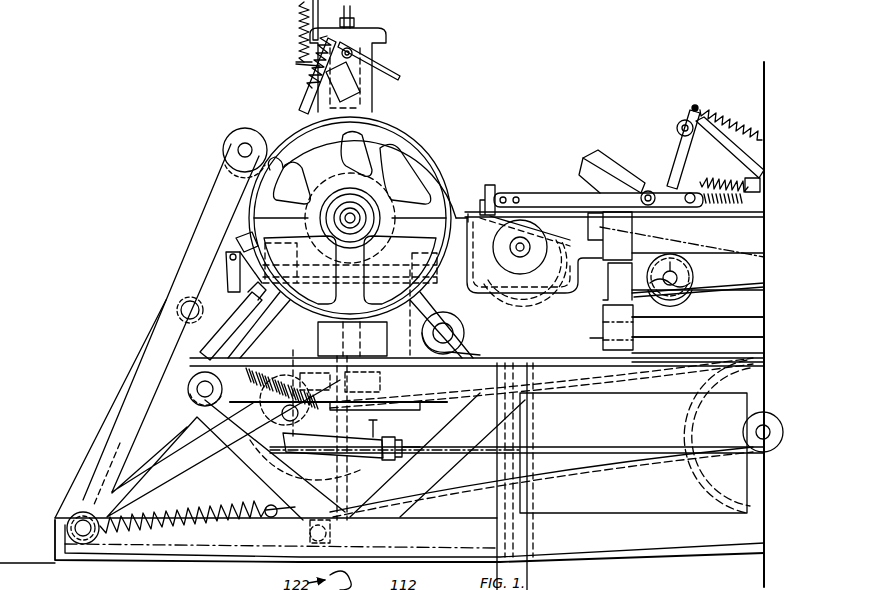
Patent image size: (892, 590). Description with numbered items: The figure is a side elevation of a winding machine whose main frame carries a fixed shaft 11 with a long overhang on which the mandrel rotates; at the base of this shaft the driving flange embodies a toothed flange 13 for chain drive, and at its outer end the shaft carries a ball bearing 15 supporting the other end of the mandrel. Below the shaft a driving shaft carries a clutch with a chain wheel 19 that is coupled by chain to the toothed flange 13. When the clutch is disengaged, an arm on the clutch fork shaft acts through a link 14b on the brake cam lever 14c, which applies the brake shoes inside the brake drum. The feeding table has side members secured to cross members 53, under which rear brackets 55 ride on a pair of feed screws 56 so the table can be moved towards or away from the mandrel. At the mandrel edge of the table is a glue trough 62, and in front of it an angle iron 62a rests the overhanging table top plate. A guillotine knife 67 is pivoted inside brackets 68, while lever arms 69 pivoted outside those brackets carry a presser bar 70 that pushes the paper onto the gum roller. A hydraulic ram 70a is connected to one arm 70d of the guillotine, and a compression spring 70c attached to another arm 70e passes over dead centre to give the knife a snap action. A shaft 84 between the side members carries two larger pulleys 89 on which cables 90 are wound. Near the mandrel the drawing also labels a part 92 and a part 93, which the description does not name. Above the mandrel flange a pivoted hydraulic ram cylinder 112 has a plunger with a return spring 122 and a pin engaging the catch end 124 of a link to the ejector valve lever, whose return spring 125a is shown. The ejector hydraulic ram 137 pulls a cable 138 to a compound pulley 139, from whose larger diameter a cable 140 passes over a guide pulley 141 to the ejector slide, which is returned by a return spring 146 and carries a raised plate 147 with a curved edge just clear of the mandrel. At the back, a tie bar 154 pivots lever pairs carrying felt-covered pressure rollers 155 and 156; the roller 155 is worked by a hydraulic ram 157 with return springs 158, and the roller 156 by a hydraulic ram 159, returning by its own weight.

The fixed shaft 11 is at (374, 204).
The toothed flange 13 is at (412, 191).
The ball bearing 15 is at (354, 201).
The link 14b is at (226, 266).
The brake cam lever 14c is at (236, 242).
The chain wheel 19 is at (418, 433).
The cross members 53 is at (618, 327).
The rear brackets 55 is at (600, 340).
The feed screws 56 is at (698, 327).
The glue trough 62 is at (538, 287).
The angle iron 62a is at (606, 232).
The guillotine knife 67 is at (581, 188).
The brackets 68 is at (648, 190).
The lever arms 69 is at (536, 192).
The presser bar 70 is at (493, 187).
The hydraulic ram 70a is at (719, 140).
The compression spring 70c is at (718, 182).
The arm of the guillotine 70d is at (672, 180).
The arm of the guillotine 70e is at (676, 132).
The shaft 84 is at (673, 270).
The larger pulleys 89 is at (695, 278).
The cables 90 is at (688, 303).
The shield 92 is at (291, 133).
The lever 93 is at (243, 190).
The hydraulic ram cylinder 112 is at (352, 85).
The return spring 122 is at (350, 27).
The catch end 124 is at (299, 96).
The return spring 125a is at (297, 22).
The hydraulic ram 137 is at (323, 448).
The cable 138 is at (578, 452).
The compound pulley 139 is at (737, 436).
The cable 140 is at (368, 408).
The guide pulley 141 is at (428, 410).
The return spring 146 is at (234, 490).
The raised plate 147 is at (316, 334).
The tie bar 154 is at (85, 520).
The pressure roller 155 is at (233, 132).
The pressure roller 156 is at (462, 331).
The hydraulic ram 157 is at (232, 330).
The return springs 158 is at (246, 417).
The hydraulic ram 159 is at (332, 532).